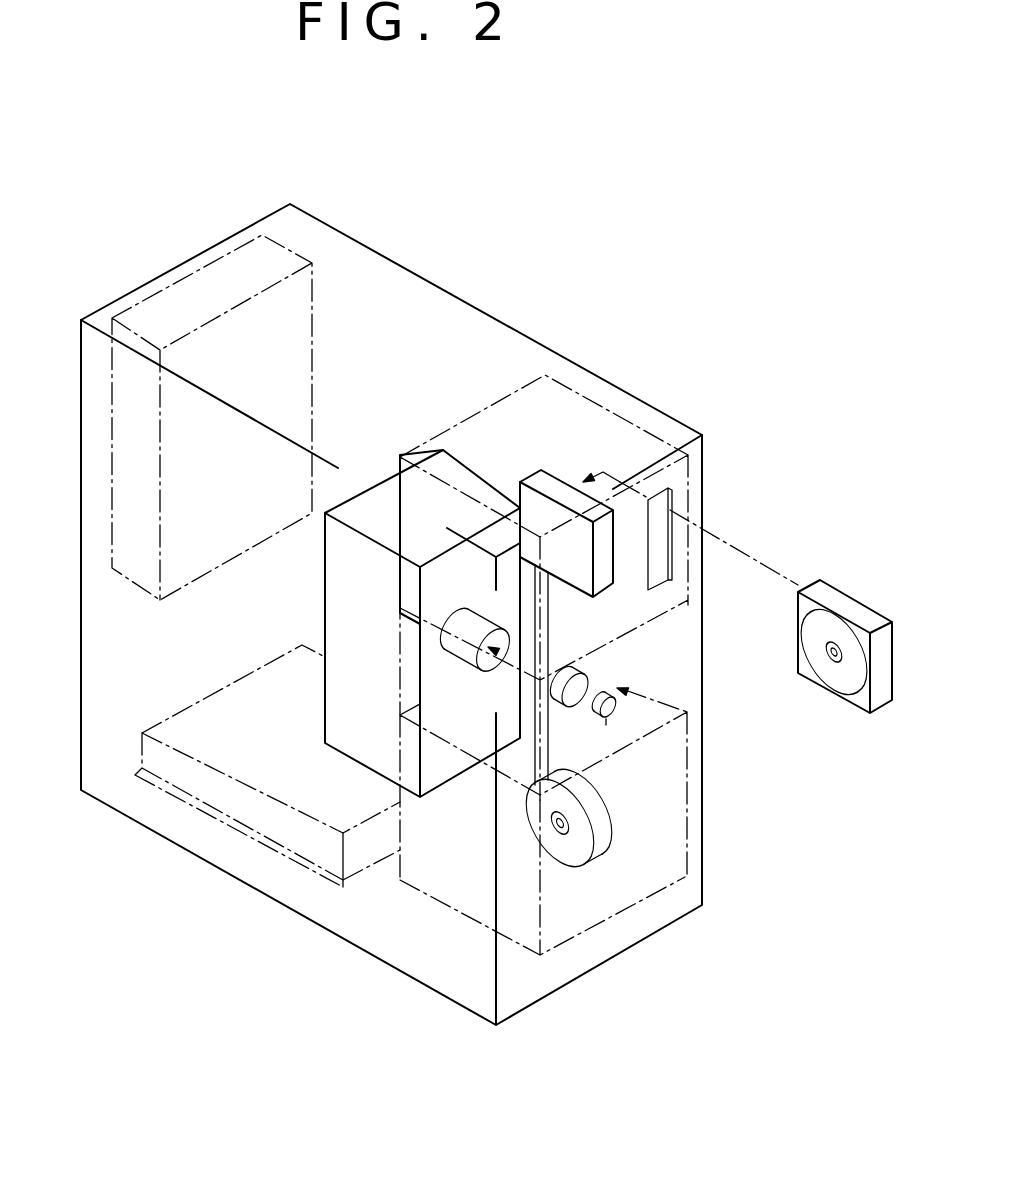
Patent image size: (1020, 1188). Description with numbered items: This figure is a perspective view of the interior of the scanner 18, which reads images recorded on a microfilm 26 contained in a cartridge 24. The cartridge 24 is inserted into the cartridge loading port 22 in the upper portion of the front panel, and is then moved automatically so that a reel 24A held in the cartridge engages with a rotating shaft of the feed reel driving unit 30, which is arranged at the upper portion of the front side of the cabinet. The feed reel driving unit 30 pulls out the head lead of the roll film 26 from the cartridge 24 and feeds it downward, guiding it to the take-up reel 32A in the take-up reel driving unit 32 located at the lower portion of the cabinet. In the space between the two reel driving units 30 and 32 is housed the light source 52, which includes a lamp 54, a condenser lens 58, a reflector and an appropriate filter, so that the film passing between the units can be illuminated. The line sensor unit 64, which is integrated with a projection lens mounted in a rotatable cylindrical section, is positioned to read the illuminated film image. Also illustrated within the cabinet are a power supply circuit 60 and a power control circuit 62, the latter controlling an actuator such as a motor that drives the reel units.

The scanner 18 is at (482, 307).
The power supply circuit 60 is at (313, 303).
The line sensor unit 64 is at (465, 461).
The microfilm 26 is at (497, 772).
The feed reel driving unit 30 is at (627, 420).
The cartridge loading port 22 is at (672, 505).
The condenser lens 58 is at (622, 677).
The light source 52 is at (632, 684).
The lamp 54 is at (615, 710).
The take-up reel driving unit 32 is at (688, 878).
The take-up reel 32A is at (583, 848).
The cartridge 24 is at (862, 600).
The reel 24A is at (842, 682).
The power control circuit 62 is at (137, 768).